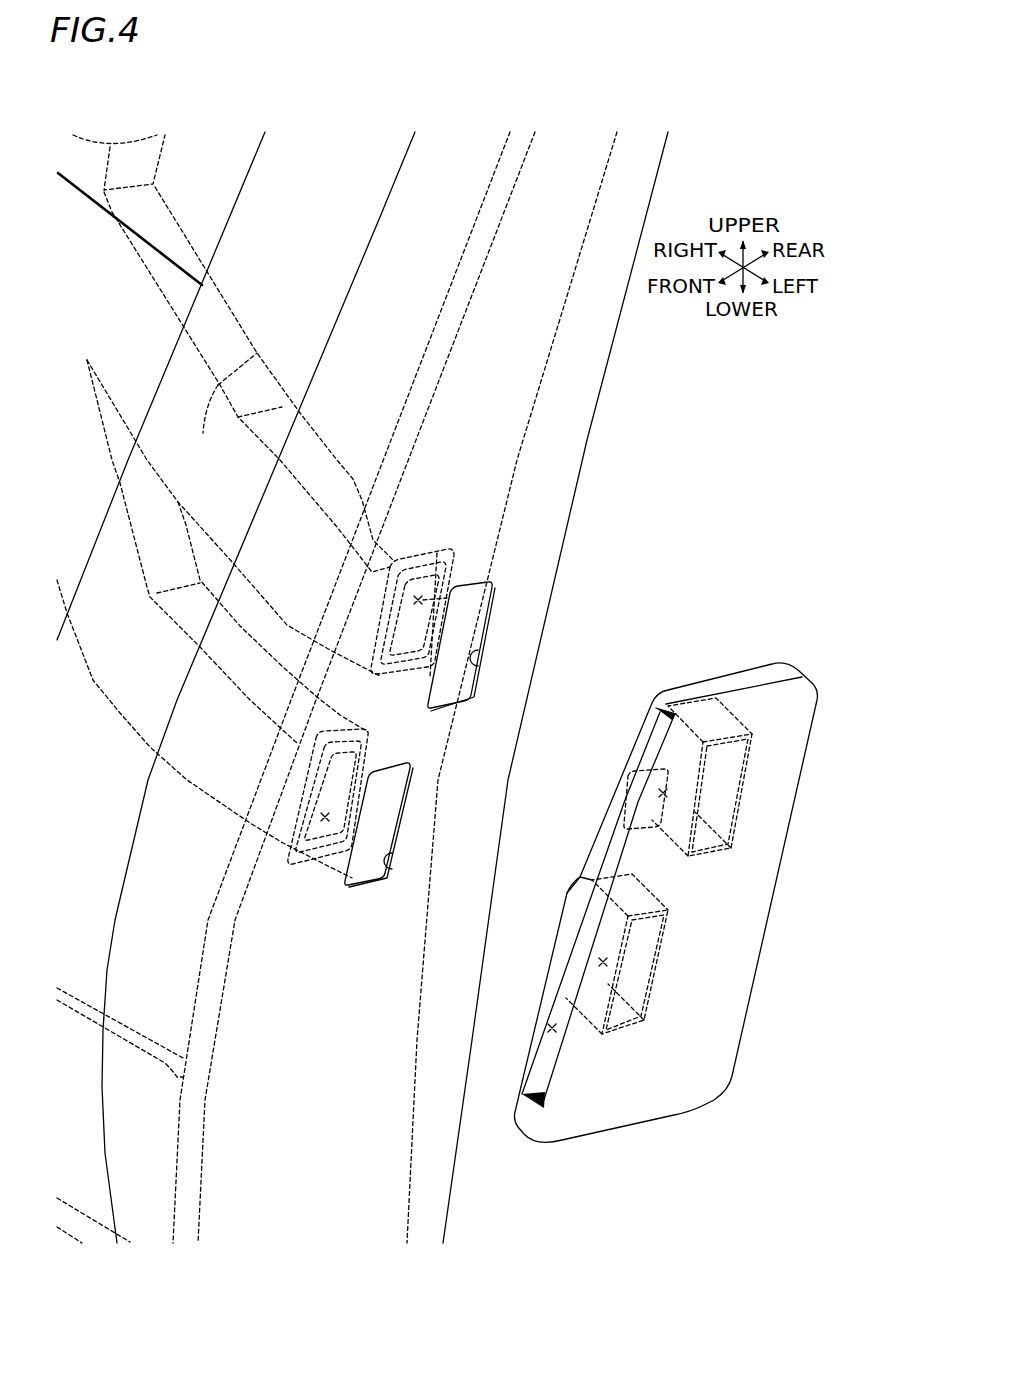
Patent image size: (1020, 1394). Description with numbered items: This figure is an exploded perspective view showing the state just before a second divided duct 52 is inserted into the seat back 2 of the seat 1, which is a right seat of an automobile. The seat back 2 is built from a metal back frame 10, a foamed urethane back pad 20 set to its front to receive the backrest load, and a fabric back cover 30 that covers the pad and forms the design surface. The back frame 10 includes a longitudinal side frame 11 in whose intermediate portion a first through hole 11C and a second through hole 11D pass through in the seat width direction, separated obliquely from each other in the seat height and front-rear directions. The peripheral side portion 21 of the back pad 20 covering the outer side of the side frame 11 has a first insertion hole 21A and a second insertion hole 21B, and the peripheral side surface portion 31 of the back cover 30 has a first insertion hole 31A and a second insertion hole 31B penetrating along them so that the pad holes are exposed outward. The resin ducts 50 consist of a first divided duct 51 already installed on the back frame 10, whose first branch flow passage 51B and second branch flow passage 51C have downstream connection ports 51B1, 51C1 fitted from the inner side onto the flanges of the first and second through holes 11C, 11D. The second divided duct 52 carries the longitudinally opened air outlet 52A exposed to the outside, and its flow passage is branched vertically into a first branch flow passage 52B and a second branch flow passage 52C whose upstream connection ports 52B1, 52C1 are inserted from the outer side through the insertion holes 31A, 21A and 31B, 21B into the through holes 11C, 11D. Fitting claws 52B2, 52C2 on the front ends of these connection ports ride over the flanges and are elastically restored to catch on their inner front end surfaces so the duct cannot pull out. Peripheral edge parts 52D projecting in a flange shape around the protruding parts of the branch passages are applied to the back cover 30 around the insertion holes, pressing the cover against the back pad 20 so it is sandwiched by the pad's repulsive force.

The seat 1 is at (768, 402).
The seat back 2 is at (727, 413).
The back frame 10 is at (507, 357).
The side frame 11 is at (490, 392).
The first through hole 11C is at (443, 603).
The second through hole 11D is at (325, 822).
The back pad 20 is at (556, 428).
The peripheral side portion 21 is at (537, 493).
The first insertion hole 21A is at (467, 616).
The second insertion hole 21B is at (380, 808).
The back cover 30 is at (586, 463).
The peripheral side surface portion 31 is at (477, 525).
The first insertion hole 31A is at (478, 668).
The second insertion hole 31B is at (391, 863).
The duct 50 is at (225, 506).
The first divided duct 51 is at (153, 220).
The first branch flow passage 51B is at (257, 353).
The connection port 51B1 is at (522, 613).
The second branch flow passage 51C is at (213, 733).
The connection port 51C1 is at (339, 834).
The second divided duct 52 is at (665, 896).
The air outlet 52A is at (548, 1027).
The first branch flow passage 52B is at (708, 727).
The connection port 52B1 is at (660, 793).
The fitting claw 52B2 is at (673, 688).
The second branch flow passage 52C is at (600, 983).
The connection port 52C1 is at (600, 962).
The fitting claw 52C2 is at (590, 877).
The peripheral edge part 52D is at (630, 1063).